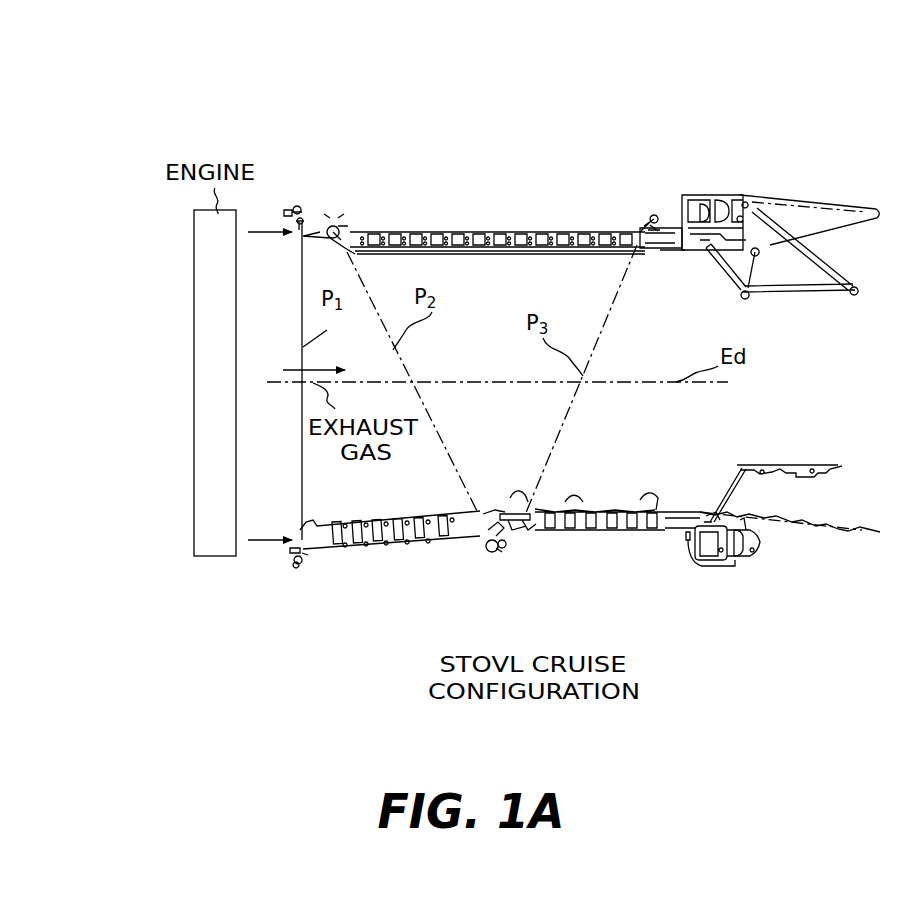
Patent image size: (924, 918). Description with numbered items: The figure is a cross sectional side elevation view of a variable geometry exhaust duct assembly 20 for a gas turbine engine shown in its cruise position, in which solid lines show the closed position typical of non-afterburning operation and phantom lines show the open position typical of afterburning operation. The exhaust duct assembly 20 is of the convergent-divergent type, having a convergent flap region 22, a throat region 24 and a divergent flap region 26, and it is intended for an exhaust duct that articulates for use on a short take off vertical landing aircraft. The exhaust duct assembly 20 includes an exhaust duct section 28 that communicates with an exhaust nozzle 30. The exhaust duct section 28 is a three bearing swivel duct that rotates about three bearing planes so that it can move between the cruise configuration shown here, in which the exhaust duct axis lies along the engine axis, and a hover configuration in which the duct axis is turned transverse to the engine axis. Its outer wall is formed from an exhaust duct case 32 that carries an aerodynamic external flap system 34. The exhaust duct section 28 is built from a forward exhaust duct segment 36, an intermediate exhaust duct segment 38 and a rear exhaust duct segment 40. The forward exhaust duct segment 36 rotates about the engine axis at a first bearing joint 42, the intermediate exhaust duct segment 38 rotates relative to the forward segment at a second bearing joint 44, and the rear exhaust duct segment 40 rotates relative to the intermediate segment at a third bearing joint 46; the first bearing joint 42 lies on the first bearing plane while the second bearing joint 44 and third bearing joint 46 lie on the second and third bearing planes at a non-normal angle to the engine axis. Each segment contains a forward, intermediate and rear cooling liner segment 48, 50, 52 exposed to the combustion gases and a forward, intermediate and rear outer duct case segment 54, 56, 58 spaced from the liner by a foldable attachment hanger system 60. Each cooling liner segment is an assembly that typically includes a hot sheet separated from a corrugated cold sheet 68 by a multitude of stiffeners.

The exhaust duct assembly 20 is at (699, 122).
The convergent flap region 22 is at (706, 275).
The throat region 24 is at (728, 307).
The divergent flap region 26 is at (802, 304).
The exhaust duct section 28 is at (545, 214).
The exhaust nozzle 30 is at (783, 158).
The exhaust duct case 32 is at (466, 232).
The aerodynamic external flap system 34 is at (818, 200).
The forward exhaust duct segment 36 is at (367, 495).
The intermediate exhaust duct segment 38 is at (478, 436).
The rear exhaust duct segment 40 is at (603, 436).
The first bearing joint 42 is at (301, 212).
The second bearing joint 44 is at (340, 234).
The third bearing joint 46 is at (648, 226).
The forward cooling liner segment 48 is at (401, 544).
The intermediate cooling liner segment 50 is at (530, 530).
The rear cooling liner segment 52 is at (620, 534).
The forward outer duct case segment 54 is at (354, 552).
The intermediate outer duct case segment 56 is at (500, 546).
The rear outer duct case segment 58 is at (570, 532).
The foldable attachment hanger system 60 is at (489, 255).
The corrugated cold sheet 68 is at (266, 550).